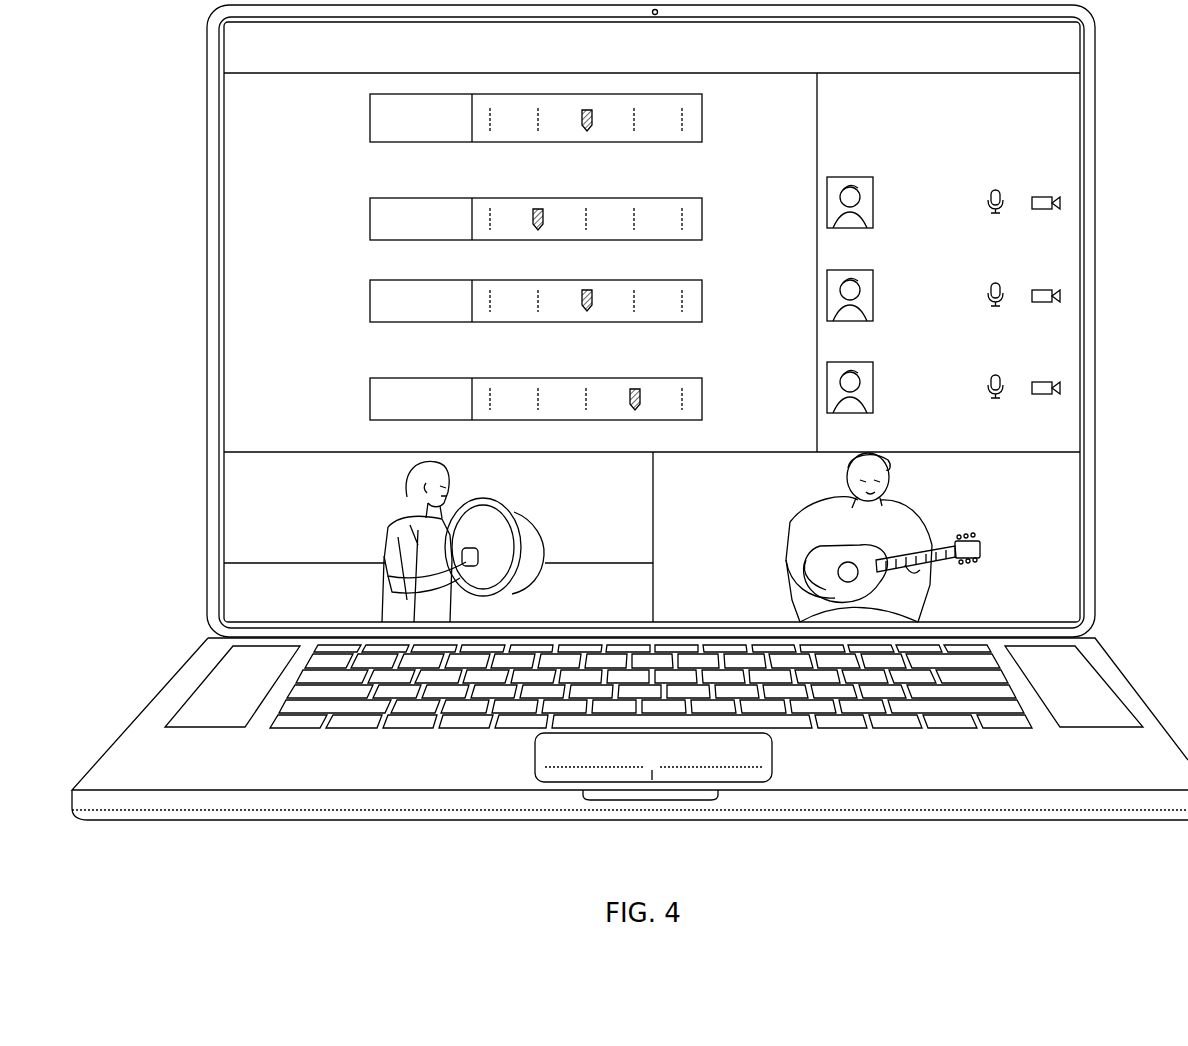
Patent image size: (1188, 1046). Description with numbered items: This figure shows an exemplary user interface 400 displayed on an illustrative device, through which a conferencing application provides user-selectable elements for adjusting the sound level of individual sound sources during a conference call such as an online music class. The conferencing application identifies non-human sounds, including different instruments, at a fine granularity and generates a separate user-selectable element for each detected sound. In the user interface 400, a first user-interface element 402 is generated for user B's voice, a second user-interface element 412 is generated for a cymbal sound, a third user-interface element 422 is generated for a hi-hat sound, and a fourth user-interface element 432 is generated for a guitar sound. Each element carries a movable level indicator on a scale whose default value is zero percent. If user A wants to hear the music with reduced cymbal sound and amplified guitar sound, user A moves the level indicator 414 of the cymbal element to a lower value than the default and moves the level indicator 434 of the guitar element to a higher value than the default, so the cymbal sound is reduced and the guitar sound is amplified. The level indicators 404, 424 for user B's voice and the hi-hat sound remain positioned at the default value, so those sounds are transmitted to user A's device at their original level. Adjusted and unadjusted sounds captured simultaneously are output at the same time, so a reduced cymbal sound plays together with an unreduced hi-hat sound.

The user interface 400 is at (184, 103).
The first user-interface element 402 is at (354, 117).
The level indicator 404 is at (598, 115).
The second user-interface element 412 is at (354, 215).
The level indicator 414 is at (530, 208).
The third user-interface element 422 is at (354, 296).
The level indicator 424 is at (598, 296).
The fourth user-interface element 432 is at (354, 396).
The level indicator 434 is at (628, 389).